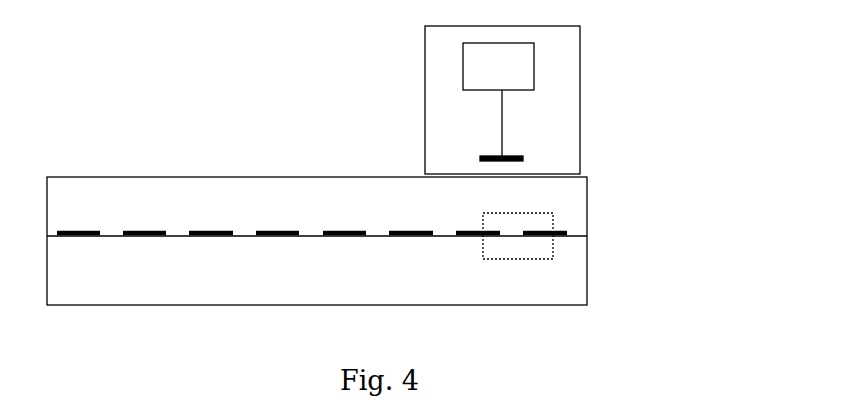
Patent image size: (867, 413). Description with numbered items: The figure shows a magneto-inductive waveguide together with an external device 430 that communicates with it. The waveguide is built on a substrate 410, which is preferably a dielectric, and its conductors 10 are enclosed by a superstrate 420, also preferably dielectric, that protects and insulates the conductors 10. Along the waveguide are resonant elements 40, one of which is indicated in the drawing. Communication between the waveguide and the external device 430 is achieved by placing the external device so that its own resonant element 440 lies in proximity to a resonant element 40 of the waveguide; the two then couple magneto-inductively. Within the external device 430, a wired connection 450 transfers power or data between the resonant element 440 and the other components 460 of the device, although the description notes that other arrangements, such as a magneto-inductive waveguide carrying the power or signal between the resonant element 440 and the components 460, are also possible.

The conductors 10 is at (150, 237).
The resonant element 40 is at (513, 260).
The substrate 410 is at (573, 275).
The superstrate 420 is at (573, 198).
The external device 430 is at (548, 77).
The resonant element 440 is at (523, 157).
The wired connection 450 is at (500, 113).
The components 460 is at (493, 70).